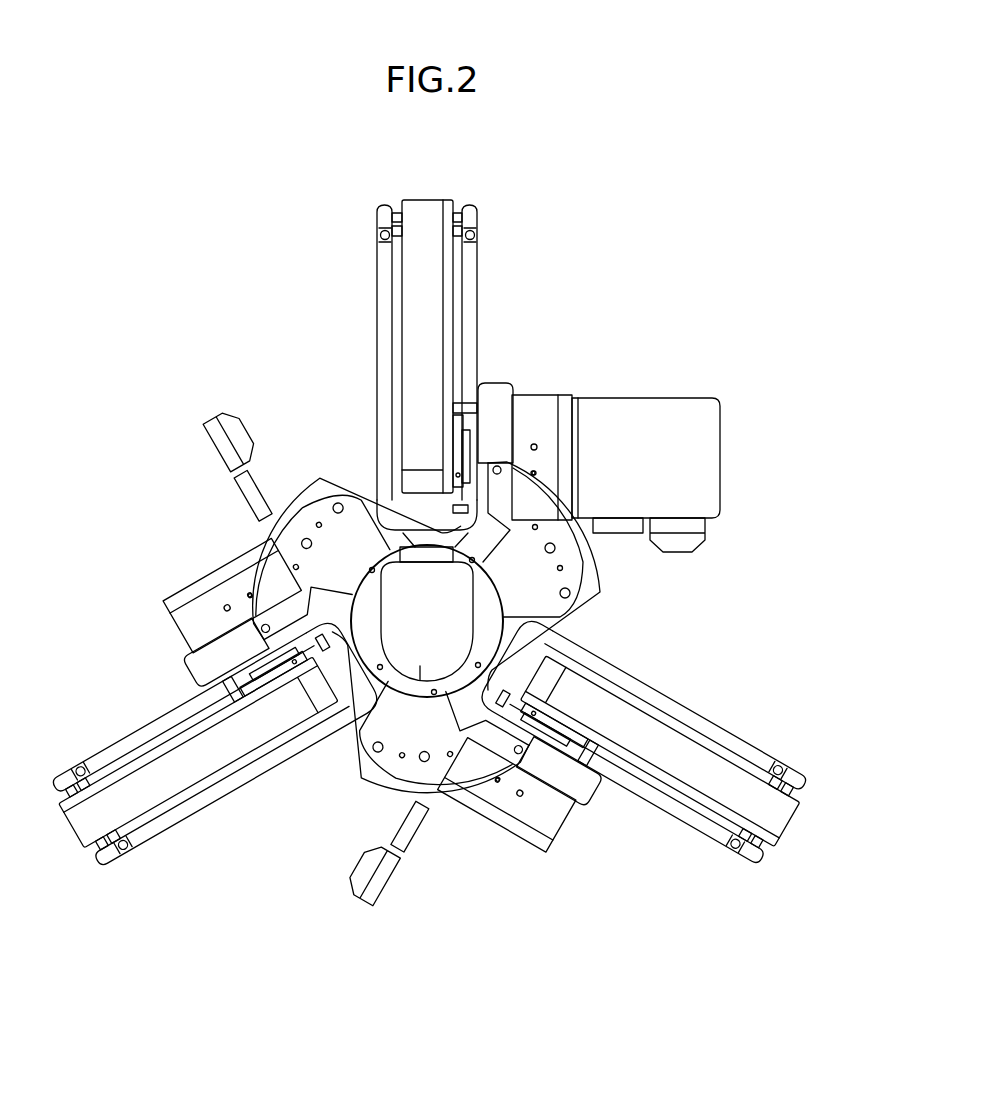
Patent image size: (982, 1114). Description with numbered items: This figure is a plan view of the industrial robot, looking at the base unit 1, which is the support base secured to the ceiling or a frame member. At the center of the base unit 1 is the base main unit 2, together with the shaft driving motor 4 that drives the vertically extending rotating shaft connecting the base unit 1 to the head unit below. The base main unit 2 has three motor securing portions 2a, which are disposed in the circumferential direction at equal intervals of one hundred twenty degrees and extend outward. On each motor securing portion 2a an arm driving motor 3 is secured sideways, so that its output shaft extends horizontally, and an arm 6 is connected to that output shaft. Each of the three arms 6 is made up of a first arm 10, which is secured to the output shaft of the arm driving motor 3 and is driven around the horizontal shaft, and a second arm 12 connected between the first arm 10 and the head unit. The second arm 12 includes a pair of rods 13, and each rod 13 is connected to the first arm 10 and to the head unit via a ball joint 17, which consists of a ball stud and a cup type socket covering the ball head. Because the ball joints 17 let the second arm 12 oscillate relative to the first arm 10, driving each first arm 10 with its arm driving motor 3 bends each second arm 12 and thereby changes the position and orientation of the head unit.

The base unit 1 is at (353, 473).
The base main unit 2 is at (338, 535).
The motor securing portion 2a is at (493, 393).
The arm driving motor 3 is at (705, 403).
The shaft driving motor 4 is at (487, 590).
The arm 6 is at (490, 204).
The first arm 10 is at (428, 308).
The second arm 12 is at (545, 212).
The rod 13 is at (474, 260).
The ball joint 17 is at (395, 207).